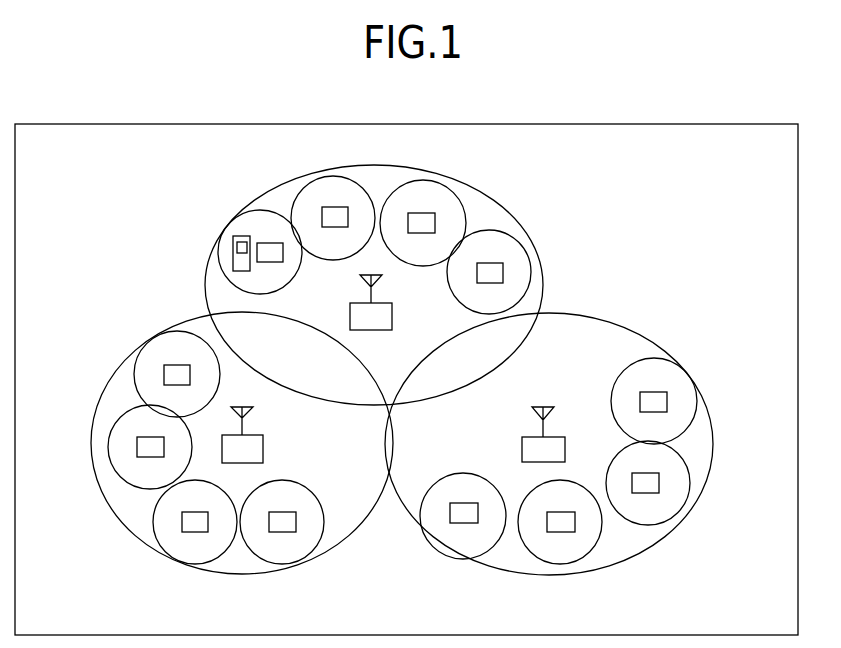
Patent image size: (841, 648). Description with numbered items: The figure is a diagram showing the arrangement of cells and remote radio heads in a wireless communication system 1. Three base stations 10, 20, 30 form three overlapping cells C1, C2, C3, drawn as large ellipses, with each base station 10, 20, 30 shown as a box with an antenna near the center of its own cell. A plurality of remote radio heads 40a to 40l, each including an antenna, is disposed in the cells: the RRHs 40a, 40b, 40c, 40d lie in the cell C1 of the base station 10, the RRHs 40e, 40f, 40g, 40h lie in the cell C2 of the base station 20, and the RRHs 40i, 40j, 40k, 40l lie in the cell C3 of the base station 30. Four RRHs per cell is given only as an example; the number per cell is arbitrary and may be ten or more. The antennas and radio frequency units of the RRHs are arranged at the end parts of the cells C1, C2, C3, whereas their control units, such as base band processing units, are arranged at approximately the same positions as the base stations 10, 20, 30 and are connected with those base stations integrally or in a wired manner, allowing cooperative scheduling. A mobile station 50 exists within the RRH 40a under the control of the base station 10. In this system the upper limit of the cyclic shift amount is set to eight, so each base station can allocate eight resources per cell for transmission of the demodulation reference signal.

The wireless communication system 1 is at (194, 124).
The base station 10 is at (392, 313).
The base station 20 is at (263, 448).
The base station 30 is at (522, 450).
The remote radio head 40a is at (270, 242).
The remote radio head 40b is at (352, 217).
The remote radio head 40c is at (437, 222).
The remote radio head 40d is at (505, 272).
The remote radio head 40e is at (163, 373).
The remote radio head 40f is at (137, 447).
The remote radio head 40g is at (193, 532).
The remote radio head 40h is at (282, 532).
The remote radio head 40i is at (668, 402).
The remote radio head 40j is at (660, 482).
The remote radio head 40k is at (560, 533).
The remote radio head 40l is at (463, 524).
The mobile station 50 is at (232, 253).
The cell C1 is at (541, 290).
The cell C2 is at (345, 547).
The cell C3 is at (714, 452).